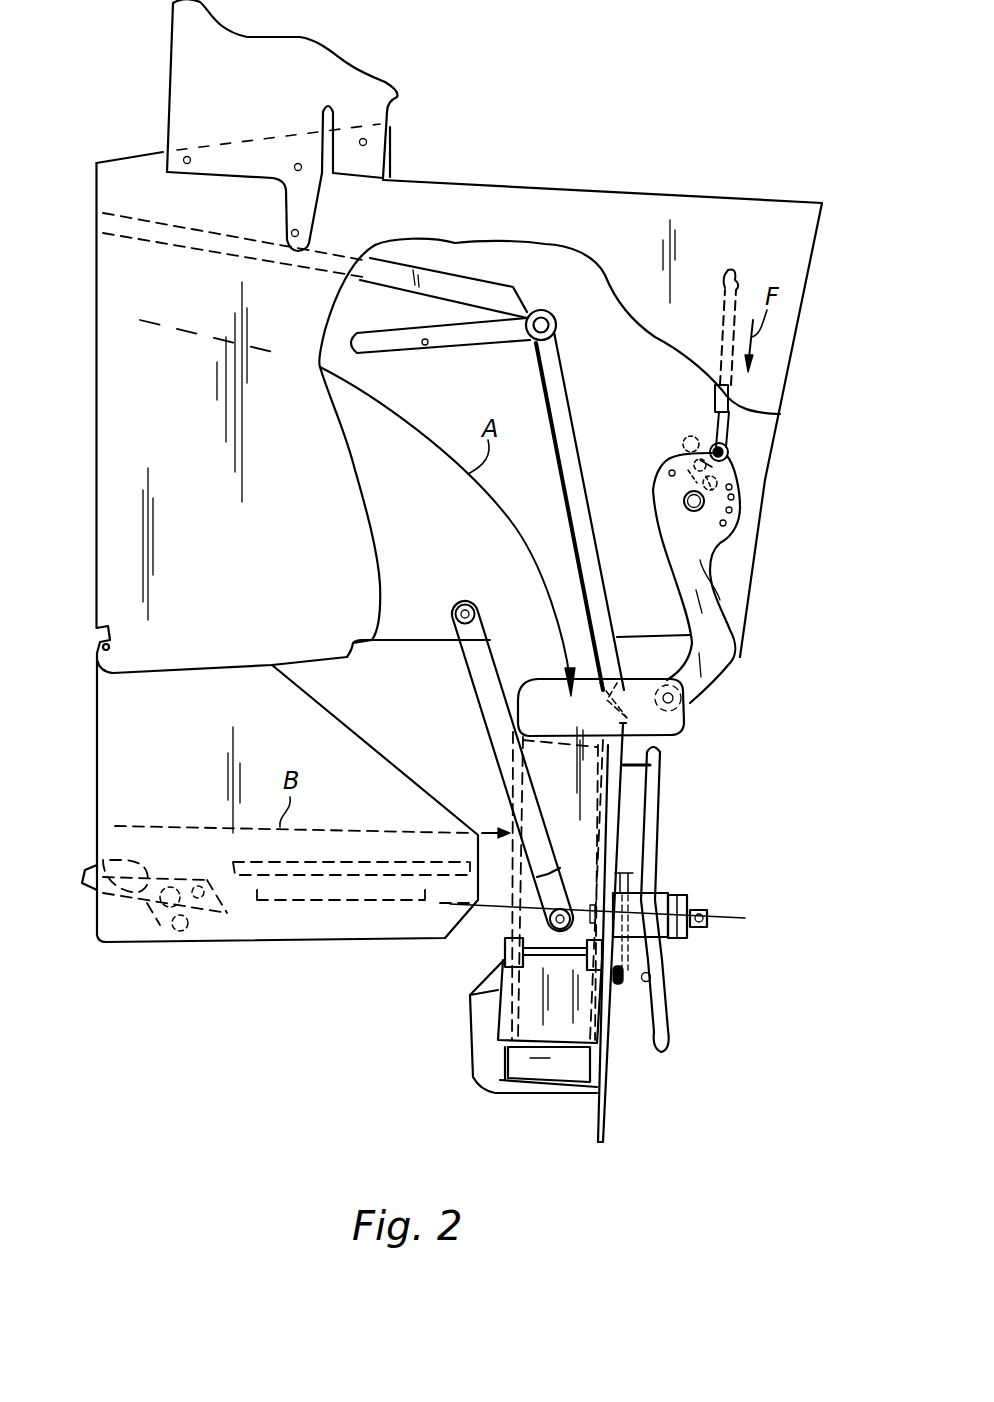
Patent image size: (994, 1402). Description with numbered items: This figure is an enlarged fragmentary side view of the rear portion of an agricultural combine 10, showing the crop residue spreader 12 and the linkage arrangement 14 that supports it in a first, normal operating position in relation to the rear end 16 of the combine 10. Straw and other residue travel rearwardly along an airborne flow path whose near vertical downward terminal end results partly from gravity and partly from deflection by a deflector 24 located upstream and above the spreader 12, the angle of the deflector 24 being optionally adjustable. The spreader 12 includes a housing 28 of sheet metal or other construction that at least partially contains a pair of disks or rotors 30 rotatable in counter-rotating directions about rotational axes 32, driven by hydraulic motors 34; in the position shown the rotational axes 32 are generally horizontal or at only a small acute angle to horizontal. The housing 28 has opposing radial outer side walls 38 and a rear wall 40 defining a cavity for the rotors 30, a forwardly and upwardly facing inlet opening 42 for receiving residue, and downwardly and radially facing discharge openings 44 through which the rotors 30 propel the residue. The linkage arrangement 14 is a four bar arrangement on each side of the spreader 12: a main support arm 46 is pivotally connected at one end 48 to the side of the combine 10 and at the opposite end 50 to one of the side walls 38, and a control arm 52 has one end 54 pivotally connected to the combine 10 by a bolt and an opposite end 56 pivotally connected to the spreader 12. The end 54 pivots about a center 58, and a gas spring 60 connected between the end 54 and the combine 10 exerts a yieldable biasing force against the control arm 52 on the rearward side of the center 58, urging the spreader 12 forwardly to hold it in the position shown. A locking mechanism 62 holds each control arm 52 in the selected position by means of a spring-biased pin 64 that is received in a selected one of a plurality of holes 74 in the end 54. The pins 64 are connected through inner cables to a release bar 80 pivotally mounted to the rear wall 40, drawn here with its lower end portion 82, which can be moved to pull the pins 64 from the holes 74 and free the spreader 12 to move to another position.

The agricultural combine 10 is at (172, 1055).
The crop residue spreader 12 is at (603, 1143).
The linkage arrangement 14 is at (738, 657).
The rear end 16 is at (797, 330).
The deflector 24 is at (570, 394).
The housing 28 is at (620, 798).
The disks or rotors 30 is at (517, 1093).
The rotational axes 32 is at (733, 918).
The hydraulic motors 34 is at (667, 940).
The side walls 38 is at (593, 775).
The rear wall 40 is at (610, 1073).
The inlet opening 42 is at (533, 680).
The discharge openings 44 is at (573, 1087).
The main support arm 46 is at (492, 742).
The end of main support arm 48 is at (457, 603).
The opposite end of main support arm 50 is at (580, 900).
The control arm 52 is at (717, 577).
The end of control arm 54 is at (653, 481).
The opposite end of control arm 56 is at (690, 703).
The center 58 is at (682, 503).
The gas spring 60 is at (777, 420).
The locking mechanism 62 is at (687, 428).
The pin 64 is at (703, 467).
The holes 74 is at (733, 487).
The release bar 80 is at (650, 1025).
The rod end cap 82 is at (670, 1047).